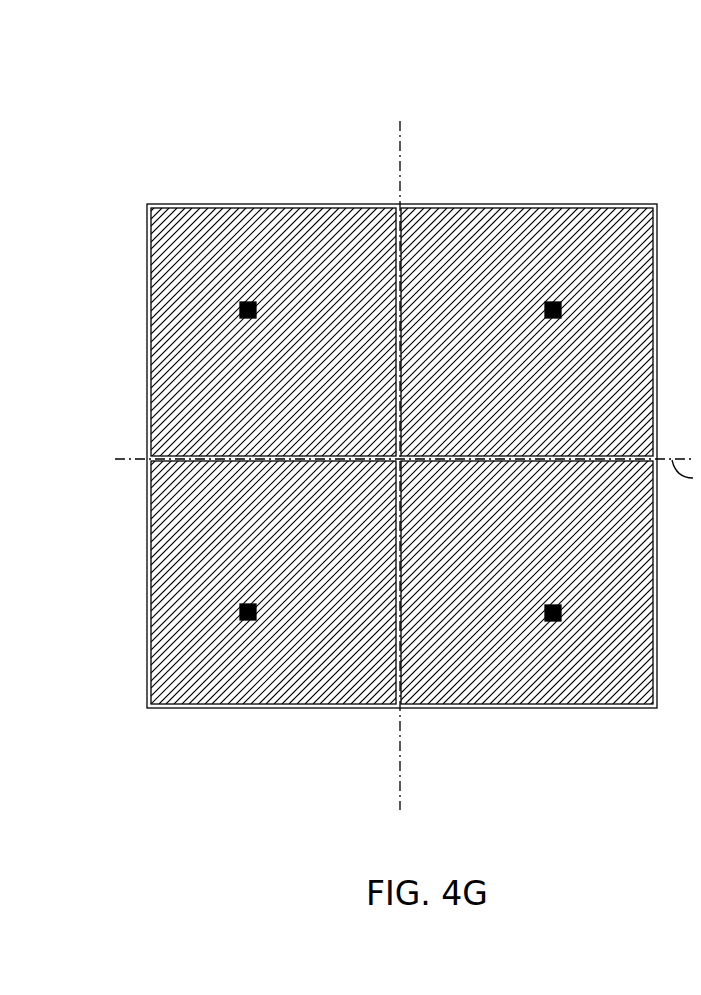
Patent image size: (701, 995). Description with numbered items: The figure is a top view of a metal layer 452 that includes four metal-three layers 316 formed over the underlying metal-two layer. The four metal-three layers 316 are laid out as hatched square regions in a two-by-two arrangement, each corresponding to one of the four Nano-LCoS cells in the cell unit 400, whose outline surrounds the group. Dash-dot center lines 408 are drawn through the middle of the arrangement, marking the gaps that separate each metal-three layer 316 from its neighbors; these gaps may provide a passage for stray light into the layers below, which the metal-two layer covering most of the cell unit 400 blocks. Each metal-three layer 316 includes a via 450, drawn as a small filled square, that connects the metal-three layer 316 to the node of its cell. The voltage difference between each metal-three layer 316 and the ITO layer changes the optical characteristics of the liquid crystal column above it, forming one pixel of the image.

The metal layer 452 is at (210, 78).
The cell unit 400 is at (315, 193).
The center line / axis 408 is at (392, 145).
The Metal-3 layer 316 is at (450, 721).
The Via-4 450 is at (232, 298).